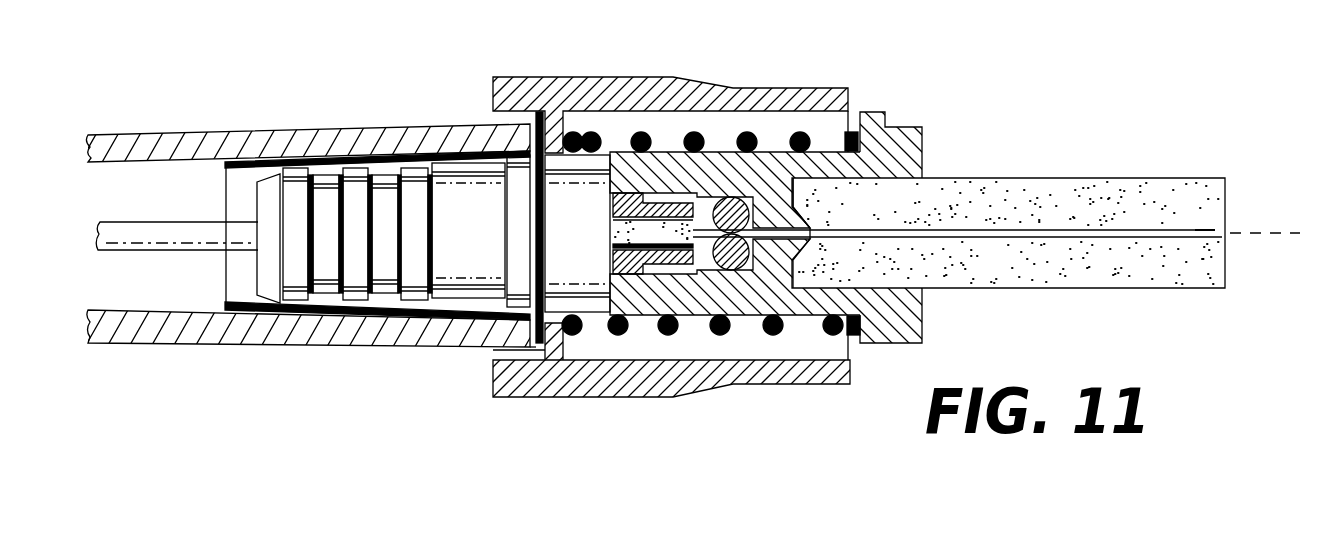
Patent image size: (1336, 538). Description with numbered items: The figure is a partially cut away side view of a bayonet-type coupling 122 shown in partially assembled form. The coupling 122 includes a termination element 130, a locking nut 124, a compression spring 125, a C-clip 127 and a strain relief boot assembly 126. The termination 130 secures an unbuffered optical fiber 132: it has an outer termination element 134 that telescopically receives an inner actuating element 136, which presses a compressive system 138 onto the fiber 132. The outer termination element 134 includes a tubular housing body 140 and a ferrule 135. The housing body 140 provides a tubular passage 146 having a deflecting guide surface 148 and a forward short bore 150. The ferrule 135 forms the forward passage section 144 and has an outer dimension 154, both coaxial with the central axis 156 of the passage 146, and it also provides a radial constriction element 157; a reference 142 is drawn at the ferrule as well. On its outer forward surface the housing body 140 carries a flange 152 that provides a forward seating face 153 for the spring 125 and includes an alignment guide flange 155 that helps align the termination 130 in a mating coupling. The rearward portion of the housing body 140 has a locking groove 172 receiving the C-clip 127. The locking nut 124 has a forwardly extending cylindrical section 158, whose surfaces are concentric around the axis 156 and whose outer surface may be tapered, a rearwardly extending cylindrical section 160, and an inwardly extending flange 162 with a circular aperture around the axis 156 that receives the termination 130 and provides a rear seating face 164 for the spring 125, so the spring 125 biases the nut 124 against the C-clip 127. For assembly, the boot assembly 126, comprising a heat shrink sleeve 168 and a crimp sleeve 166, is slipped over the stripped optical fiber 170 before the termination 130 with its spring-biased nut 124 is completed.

The bayonet-type coupling 122 is at (670, 202).
The locking nut 124 is at (735, 86).
The compression spring 125 is at (597, 140).
The strain relief boot assembly 126 is at (280, 126).
The C-clip 127 is at (538, 150).
The termination element 130 is at (1008, 228).
The unbuffered optical fiber 132 is at (1206, 231).
The outer termination element 134 is at (799, 328).
The ferrule 135 is at (1020, 178).
The actuating element 136 is at (638, 276).
The compressive system 138 is at (721, 196).
The tubular housing body 140 is at (849, 140).
The ferrule body 142 is at (1143, 178).
The forward passage section 144 is at (1062, 239).
The tubular passage 146 is at (664, 200).
The deflecting guide surface 148 is at (745, 271).
The forward short bore 150 is at (768, 215).
The flange 152 is at (924, 322).
The forward seating face 153 is at (853, 120).
The outer dimension 154 is at (1172, 291).
The alignment guide flange 155 is at (890, 122).
The central axis 156 is at (1270, 232).
The radial constriction element 157 is at (808, 205).
The forwardly extending cylindrical section 158 is at (714, 396).
The rearwardly extending cylindrical section 160 is at (522, 401).
The inwardly extending flange 162 is at (530, 348).
The rear seating face 164 is at (563, 345).
The crimp sleeve 166 is at (266, 309).
The heat shrink sleeve 168 is at (178, 344).
The stripped optical fiber 170 is at (143, 244).
The locking groove 172 is at (532, 228).